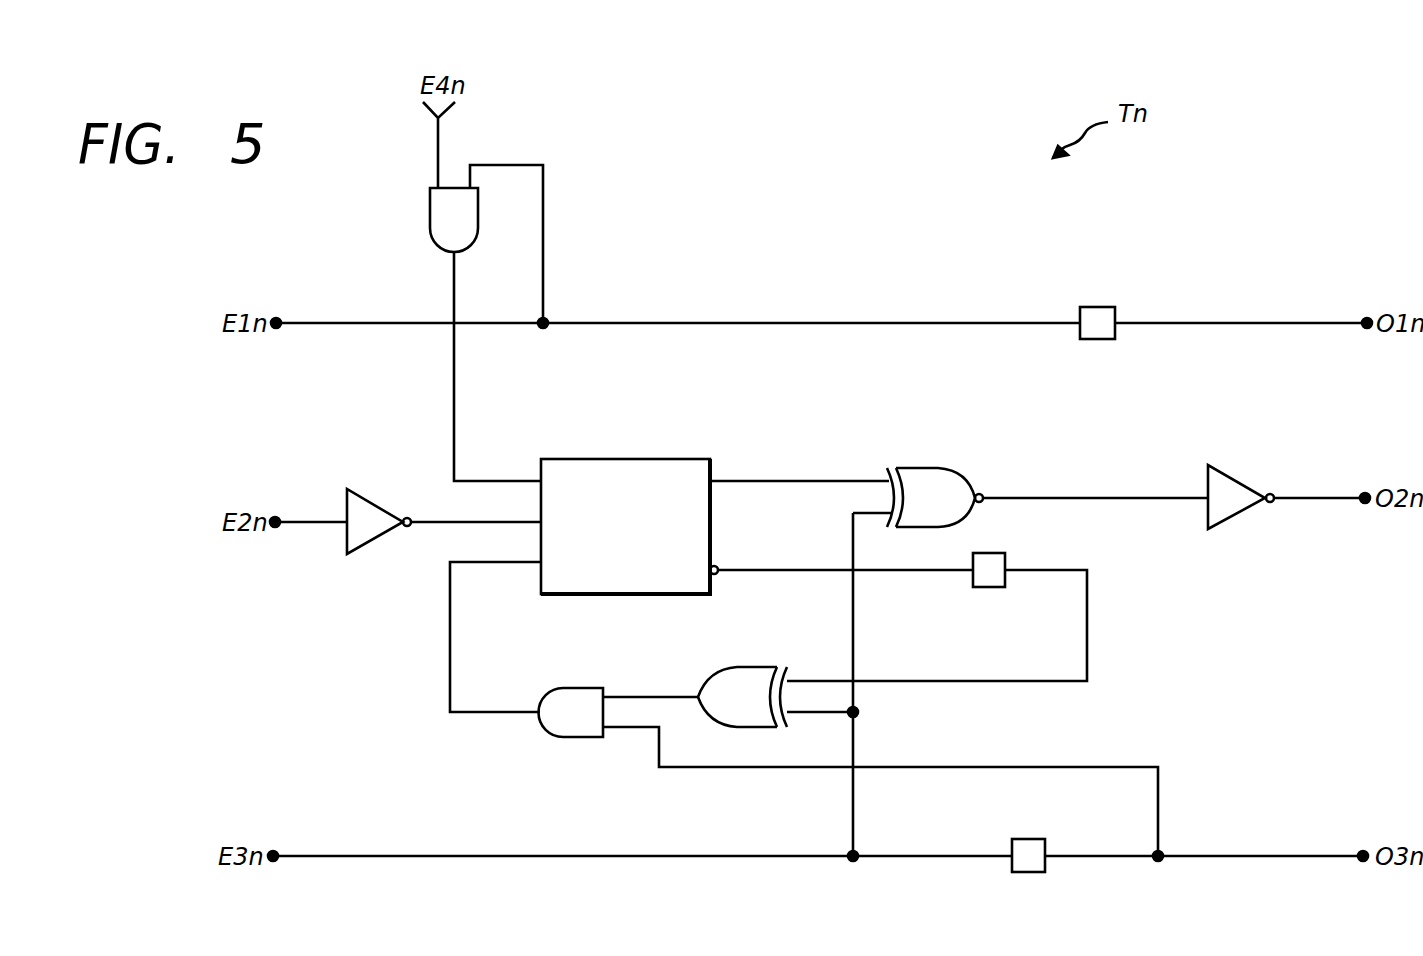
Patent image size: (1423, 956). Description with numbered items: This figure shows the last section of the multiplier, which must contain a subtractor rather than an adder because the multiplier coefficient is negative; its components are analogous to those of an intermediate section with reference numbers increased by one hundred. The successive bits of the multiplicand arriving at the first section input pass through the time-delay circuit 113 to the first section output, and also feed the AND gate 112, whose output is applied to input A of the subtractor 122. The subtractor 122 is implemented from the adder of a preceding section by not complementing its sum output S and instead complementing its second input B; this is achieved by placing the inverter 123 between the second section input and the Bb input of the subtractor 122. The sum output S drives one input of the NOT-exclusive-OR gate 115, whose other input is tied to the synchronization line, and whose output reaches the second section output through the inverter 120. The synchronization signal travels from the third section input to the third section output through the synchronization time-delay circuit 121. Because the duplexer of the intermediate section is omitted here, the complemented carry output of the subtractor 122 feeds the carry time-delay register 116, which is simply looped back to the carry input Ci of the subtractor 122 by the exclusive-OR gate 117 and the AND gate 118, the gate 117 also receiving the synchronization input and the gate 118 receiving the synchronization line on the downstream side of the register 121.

The AND gate 112 is at (442, 210).
The time-delay circuit 113 is at (1097, 317).
The NOT-exclusive-OR gate 115 is at (927, 478).
The carry time-delay circuit 116 is at (990, 580).
The exclusive-OR gate 117 is at (743, 680).
The AND gate 118 is at (557, 718).
The inverter 120 is at (1238, 513).
The synchronization time-delay circuit 121 is at (1030, 848).
The subtractor 122 is at (630, 459).
The inverter 123 is at (365, 513).